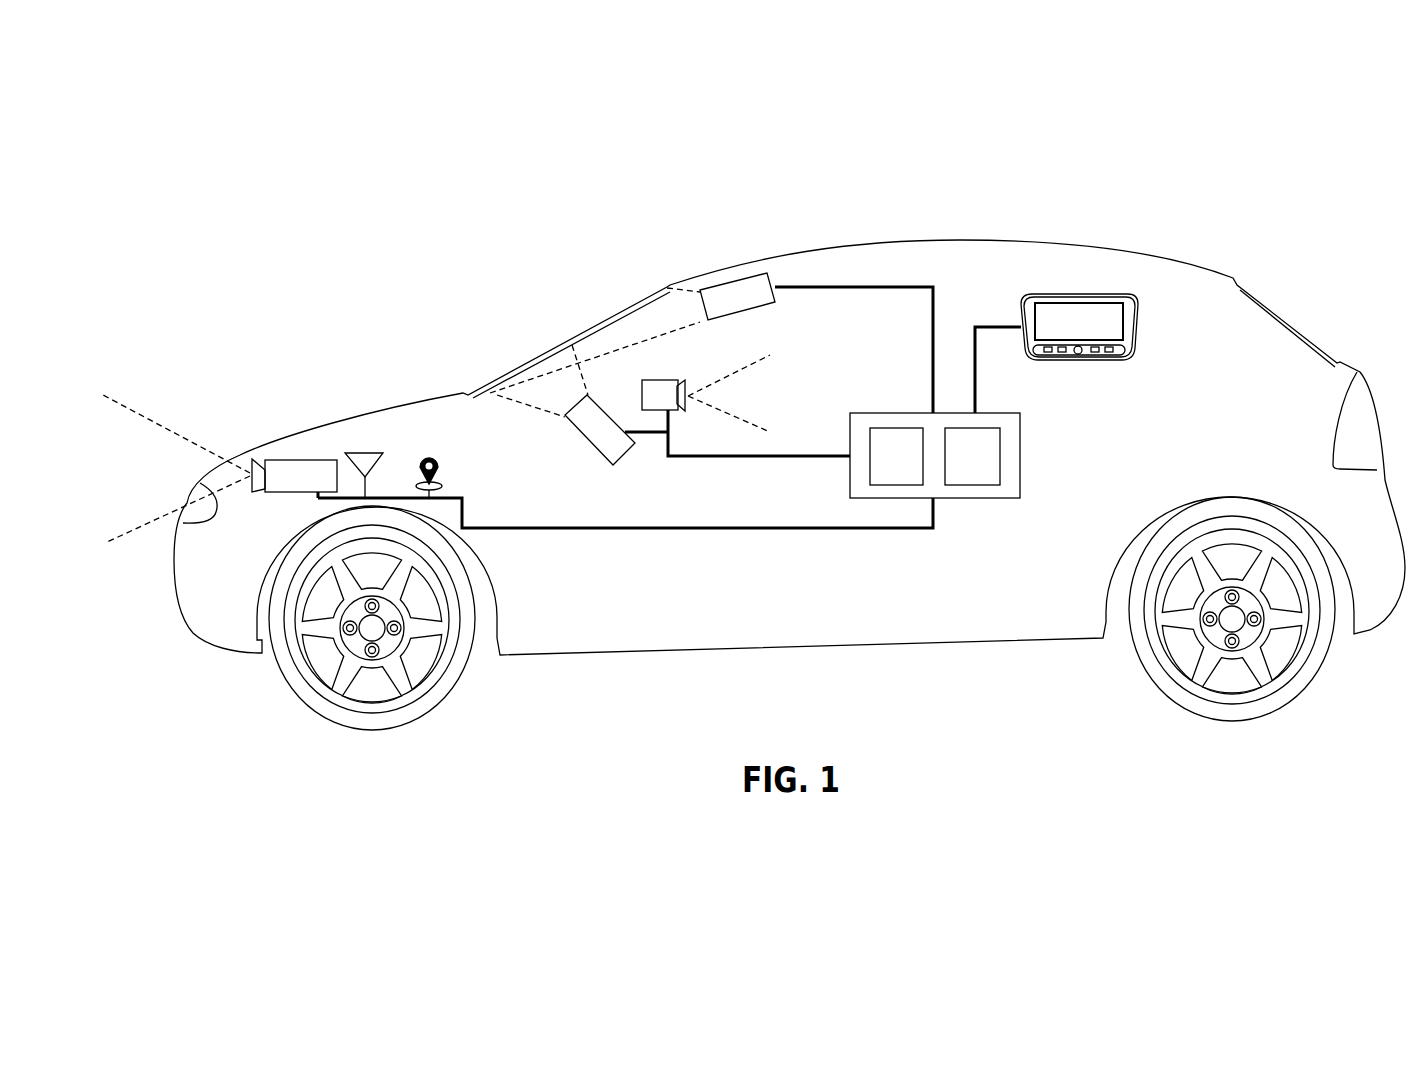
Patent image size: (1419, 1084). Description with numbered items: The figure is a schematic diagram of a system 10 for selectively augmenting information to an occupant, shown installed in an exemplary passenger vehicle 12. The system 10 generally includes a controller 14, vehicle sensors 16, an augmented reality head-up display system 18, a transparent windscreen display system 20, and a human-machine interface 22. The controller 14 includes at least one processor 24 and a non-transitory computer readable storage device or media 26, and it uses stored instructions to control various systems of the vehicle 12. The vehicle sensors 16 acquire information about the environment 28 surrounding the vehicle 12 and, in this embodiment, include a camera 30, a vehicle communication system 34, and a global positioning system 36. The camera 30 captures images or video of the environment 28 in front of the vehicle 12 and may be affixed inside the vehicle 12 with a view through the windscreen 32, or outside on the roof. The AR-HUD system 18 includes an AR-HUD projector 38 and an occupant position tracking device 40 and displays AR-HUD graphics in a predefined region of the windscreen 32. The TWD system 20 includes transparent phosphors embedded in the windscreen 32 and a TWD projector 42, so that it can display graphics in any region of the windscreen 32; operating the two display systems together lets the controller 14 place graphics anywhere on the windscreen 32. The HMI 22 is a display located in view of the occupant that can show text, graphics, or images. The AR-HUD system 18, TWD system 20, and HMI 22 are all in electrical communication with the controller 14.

The system 10 is at (521, 336).
The vehicle 12 is at (1142, 250).
The controller 14 is at (975, 461).
The vehicle sensors 16 is at (261, 511).
The augmented reality head-up display (AR-HUD) system 18 is at (651, 455).
The transparent windscreen display (TWD) system 20 is at (810, 279).
The human-machine interface (HMI) 22 is at (1138, 345).
The processor 24 is at (613, 313).
The non-transitory computer readable storage device or media 26 is at (883, 469).
The environment 28 is at (959, 469).
The camera 30 is at (292, 287).
The windscreen 32 is at (313, 488).
The vehicle communication system 34 is at (347, 452).
The global positioning system (GPS) 36 is at (427, 455).
The AR-HUD projector 38 is at (745, 300).
The occupant position tracking device 40 is at (648, 380).
The TWD projector 42 is at (590, 447).